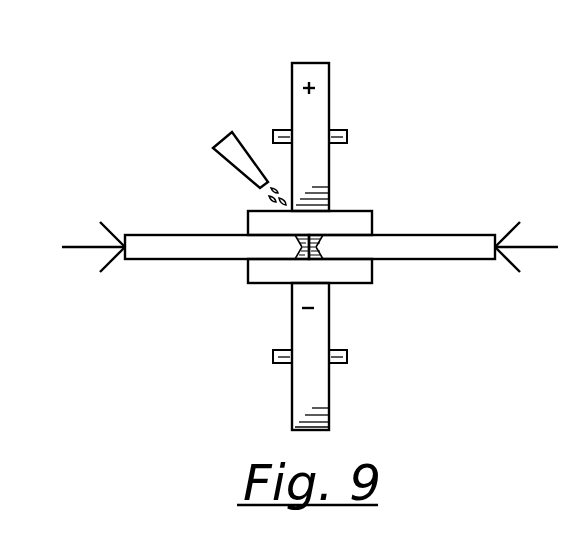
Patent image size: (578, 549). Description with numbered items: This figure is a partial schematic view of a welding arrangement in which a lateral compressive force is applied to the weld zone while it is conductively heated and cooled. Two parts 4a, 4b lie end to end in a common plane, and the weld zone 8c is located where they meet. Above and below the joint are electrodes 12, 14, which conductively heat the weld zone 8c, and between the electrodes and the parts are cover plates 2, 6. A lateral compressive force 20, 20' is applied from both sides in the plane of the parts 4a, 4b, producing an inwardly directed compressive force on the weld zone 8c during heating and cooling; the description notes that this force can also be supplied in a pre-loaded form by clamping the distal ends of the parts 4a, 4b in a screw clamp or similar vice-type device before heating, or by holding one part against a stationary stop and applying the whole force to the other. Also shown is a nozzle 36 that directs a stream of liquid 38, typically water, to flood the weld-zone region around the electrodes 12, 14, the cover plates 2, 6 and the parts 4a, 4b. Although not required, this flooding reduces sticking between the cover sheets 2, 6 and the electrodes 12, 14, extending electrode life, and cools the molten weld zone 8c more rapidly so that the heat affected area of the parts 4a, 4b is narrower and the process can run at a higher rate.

The cover plate 2 is at (361, 222).
The cover plate 6 is at (360, 276).
The part 4a is at (198, 245).
The part 4b is at (427, 246).
The weld zone 8c is at (297, 248).
The electrode 12 is at (323, 117).
The electrode 14 is at (317, 387).
The lateral compressive force 20 is at (92, 244).
The lateral compressive force 20' is at (532, 244).
The nozzle 36 is at (219, 146).
The stream of liquid 38 is at (263, 198).